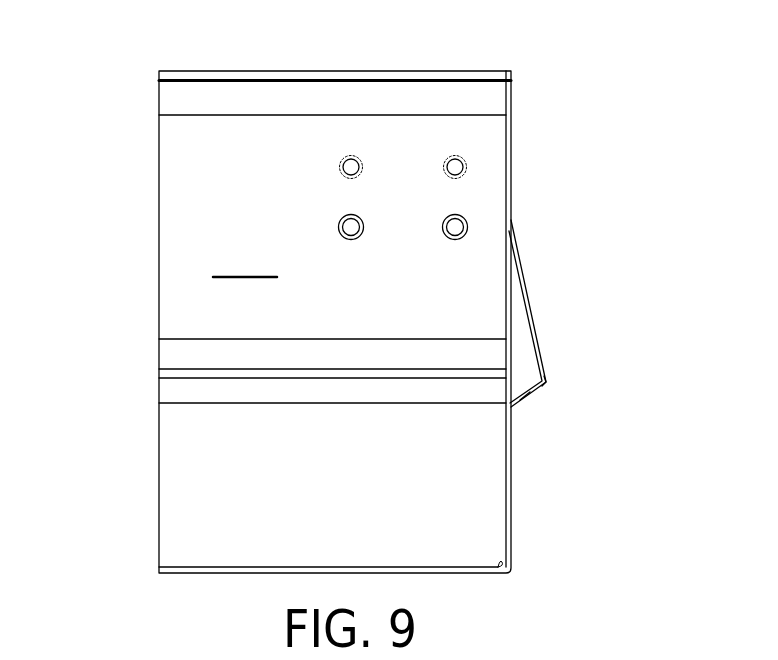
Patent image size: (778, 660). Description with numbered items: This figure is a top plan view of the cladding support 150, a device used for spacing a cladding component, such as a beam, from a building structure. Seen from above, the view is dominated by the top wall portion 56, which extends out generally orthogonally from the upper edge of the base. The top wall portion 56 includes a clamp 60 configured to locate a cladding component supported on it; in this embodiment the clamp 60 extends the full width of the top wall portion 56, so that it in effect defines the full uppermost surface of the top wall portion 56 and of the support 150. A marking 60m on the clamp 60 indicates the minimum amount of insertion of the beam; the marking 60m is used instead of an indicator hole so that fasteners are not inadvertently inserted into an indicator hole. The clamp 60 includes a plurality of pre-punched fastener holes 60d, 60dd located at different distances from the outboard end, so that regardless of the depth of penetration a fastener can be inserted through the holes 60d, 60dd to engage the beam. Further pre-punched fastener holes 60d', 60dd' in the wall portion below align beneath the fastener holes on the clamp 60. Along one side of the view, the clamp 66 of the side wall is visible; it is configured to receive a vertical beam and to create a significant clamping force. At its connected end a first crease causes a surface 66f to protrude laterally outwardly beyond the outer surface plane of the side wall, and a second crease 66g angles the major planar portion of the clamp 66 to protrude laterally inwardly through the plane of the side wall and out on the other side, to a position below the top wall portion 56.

The top wall portion 56 is at (152, 330).
The clamp 60 is at (180, 165).
The marking 60m is at (208, 256).
The pre-punched fastener hole 60d' is at (327, 130).
The pre-punched fastener hole 60dd' is at (439, 130).
The pre-punched fastener hole 60dd is at (534, 162).
The pre-punched fastener hole 60d is at (528, 218).
The clamp 66 is at (540, 345).
The second crease 66g is at (547, 383).
The surface 66f is at (537, 394).
The cladding support 150 is at (757, 463).